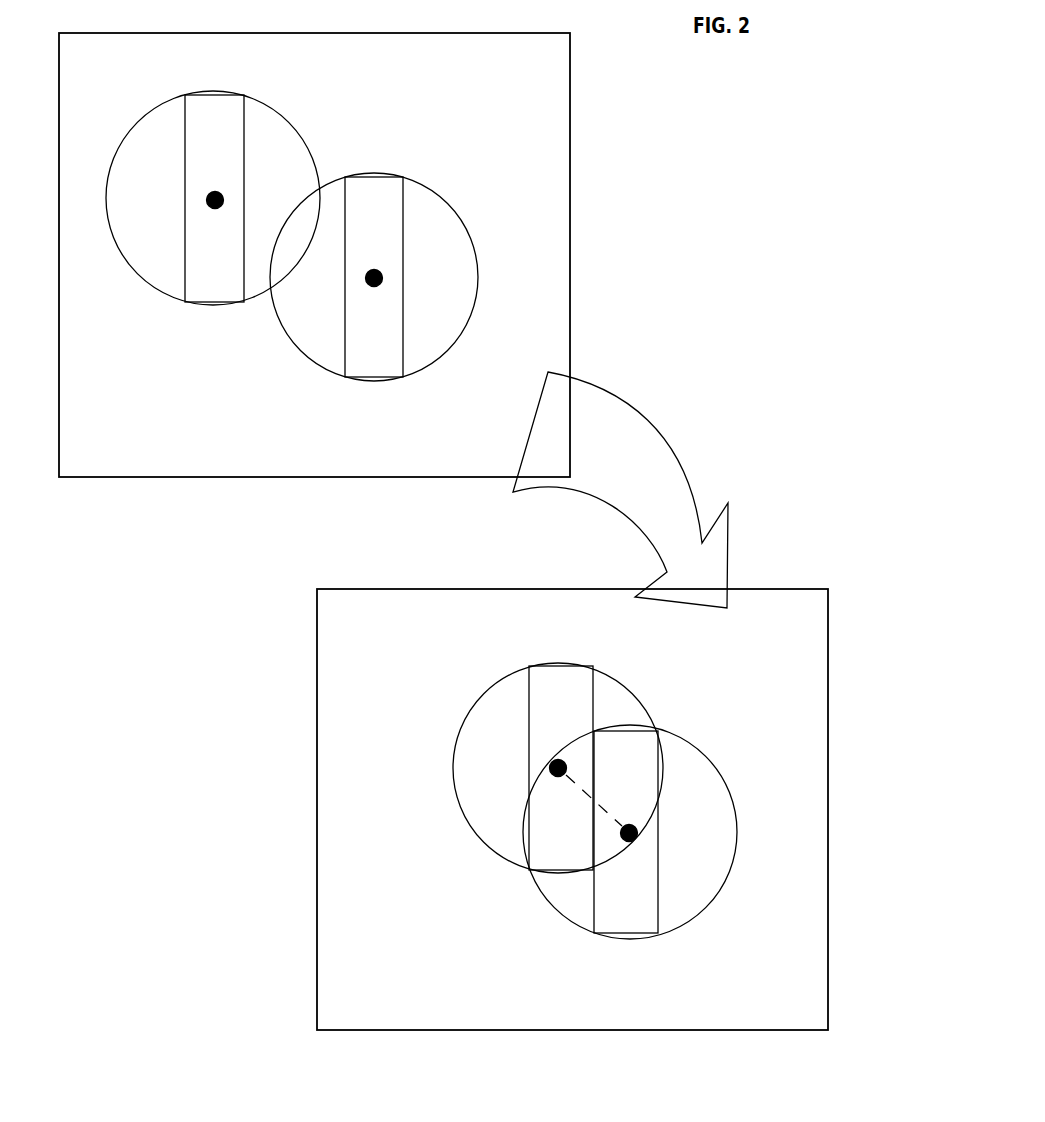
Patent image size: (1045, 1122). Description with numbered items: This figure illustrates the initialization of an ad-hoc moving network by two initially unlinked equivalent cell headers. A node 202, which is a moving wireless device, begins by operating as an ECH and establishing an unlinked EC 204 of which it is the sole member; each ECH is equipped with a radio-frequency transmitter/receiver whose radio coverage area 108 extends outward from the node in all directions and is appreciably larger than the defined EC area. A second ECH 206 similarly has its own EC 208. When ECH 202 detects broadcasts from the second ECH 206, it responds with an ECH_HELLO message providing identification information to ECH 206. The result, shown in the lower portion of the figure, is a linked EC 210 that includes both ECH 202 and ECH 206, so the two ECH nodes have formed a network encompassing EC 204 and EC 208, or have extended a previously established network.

The radio coverage area 108 is at (263, 293).
The first ECH node 202 is at (207, 208).
The first EC 204 is at (218, 145).
The second ECH 206 is at (376, 285).
The second EC 208 is at (392, 230).
The linked EC 210 is at (595, 788).